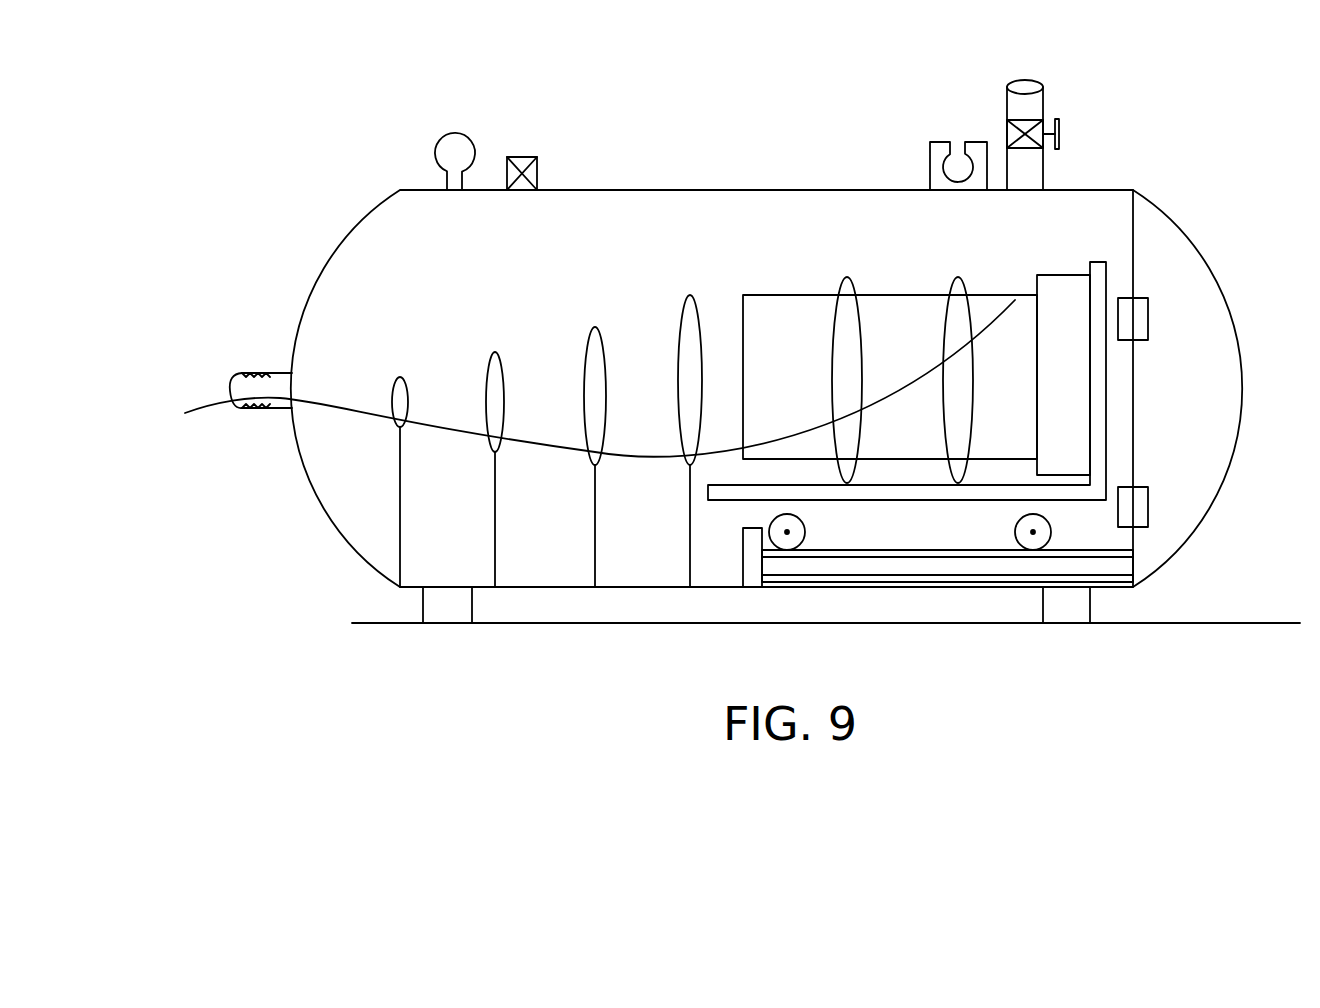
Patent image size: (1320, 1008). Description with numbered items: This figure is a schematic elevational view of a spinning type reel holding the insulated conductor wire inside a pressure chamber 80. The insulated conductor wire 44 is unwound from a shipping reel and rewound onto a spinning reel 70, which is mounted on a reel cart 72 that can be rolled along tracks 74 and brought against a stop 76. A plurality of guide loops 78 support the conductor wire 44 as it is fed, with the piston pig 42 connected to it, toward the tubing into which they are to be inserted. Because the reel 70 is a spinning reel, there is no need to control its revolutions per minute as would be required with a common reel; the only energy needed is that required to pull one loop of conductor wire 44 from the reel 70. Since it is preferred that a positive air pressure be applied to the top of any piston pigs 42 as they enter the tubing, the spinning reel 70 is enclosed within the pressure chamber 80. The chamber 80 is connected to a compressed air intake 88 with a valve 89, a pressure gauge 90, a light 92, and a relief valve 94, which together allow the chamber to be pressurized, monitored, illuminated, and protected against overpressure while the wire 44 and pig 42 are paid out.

The piston pig 42 is at (180, 418).
The insulated conductor wire 44 is at (430, 417).
The spinning reel 70 is at (1065, 432).
The reel cart 72 is at (1077, 493).
The tracks 74 is at (838, 563).
The stop 76 is at (753, 570).
The guide loops 78 is at (575, 462).
The pressure chamber 80 is at (432, 282).
The compressed air intake 88 is at (1033, 77).
The valve 89 is at (1068, 132).
The pressure gauge 90 is at (428, 152).
The light 92 is at (953, 137).
The relief valve 94 is at (510, 150).